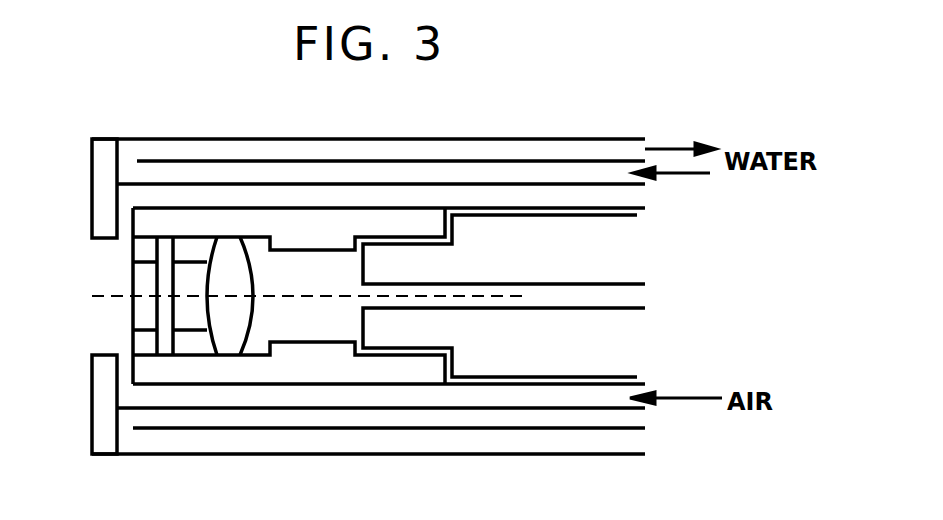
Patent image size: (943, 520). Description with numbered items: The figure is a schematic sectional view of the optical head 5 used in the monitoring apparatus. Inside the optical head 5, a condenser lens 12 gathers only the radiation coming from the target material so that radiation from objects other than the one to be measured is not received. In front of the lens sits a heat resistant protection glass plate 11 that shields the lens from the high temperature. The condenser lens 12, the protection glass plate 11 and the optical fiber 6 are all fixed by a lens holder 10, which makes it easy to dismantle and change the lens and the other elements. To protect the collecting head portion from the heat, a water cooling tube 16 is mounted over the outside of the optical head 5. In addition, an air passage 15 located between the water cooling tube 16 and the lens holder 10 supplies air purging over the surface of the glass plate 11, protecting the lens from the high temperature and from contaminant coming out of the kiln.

The optical head 5 is at (290, 140).
The water cooling tube 16 is at (548, 150).
The optical fiber 6 is at (601, 295).
The lens holder 10 is at (337, 367).
The heat resistant protection glass plate 11 is at (133, 318).
The condenser lens 12 is at (230, 337).
The air passage 15 is at (537, 394).